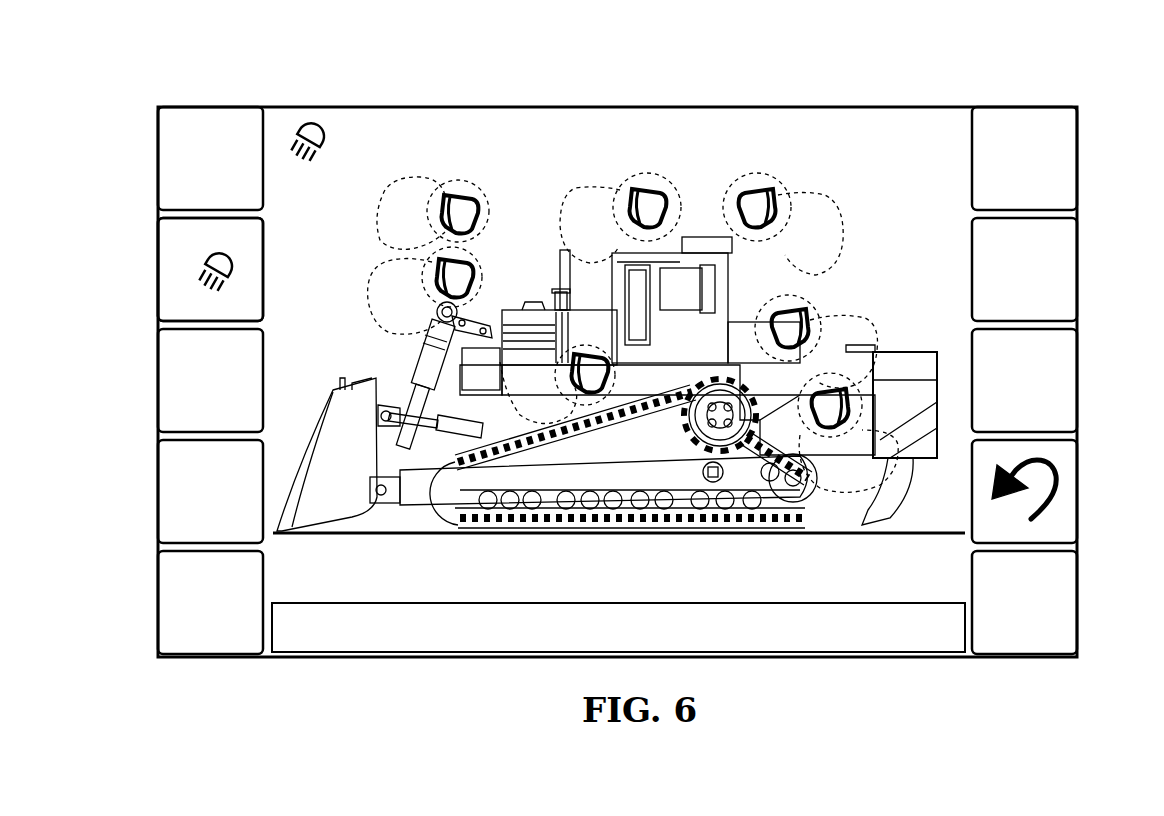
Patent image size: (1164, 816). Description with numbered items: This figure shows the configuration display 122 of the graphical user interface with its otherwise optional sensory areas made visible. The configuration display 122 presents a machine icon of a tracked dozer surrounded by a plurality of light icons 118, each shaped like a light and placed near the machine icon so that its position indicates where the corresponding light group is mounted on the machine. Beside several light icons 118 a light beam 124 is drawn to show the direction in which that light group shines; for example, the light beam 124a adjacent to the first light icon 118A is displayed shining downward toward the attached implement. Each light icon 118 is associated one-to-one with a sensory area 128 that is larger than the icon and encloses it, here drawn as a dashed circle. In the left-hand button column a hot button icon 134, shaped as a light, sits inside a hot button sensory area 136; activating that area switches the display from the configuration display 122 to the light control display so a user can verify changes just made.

The configuration display 122 is at (262, 90).
The light icon 118 is at (472, 198).
The first light icon 118A is at (802, 312).
The light beam 124 is at (378, 193).
The light beam 124a is at (850, 322).
The sensory area 128 is at (490, 212).
The hot button icon 134 is at (196, 265).
The hot button sensory area 136 is at (165, 312).